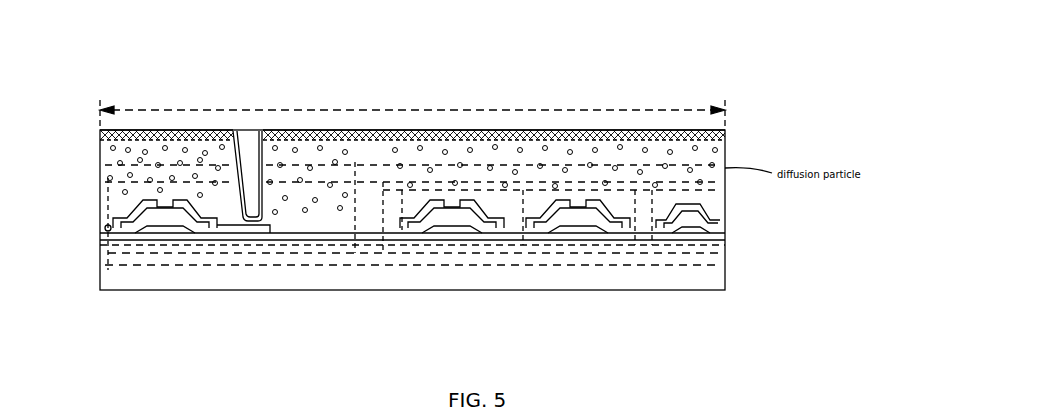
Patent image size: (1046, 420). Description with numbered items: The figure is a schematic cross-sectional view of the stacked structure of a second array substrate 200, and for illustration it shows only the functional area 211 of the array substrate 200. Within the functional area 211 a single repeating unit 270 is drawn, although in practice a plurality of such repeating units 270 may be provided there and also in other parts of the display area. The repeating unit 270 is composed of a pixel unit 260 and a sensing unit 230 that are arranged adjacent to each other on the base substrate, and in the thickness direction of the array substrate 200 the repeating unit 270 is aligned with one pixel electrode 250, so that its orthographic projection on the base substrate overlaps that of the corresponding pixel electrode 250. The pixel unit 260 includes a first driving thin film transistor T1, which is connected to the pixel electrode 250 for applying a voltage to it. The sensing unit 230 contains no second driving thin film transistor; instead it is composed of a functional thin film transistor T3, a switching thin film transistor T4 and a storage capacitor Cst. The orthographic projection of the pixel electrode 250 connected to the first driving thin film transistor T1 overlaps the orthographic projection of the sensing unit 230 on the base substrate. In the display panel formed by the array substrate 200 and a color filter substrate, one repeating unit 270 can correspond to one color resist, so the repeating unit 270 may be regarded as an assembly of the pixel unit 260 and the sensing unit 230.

The array substrate 200 is at (620, 87).
The functional area 211 is at (412, 108).
The pixel electrode 250 is at (727, 132).
The pixel unit 260 is at (125, 180).
The repeating unit 270 is at (138, 162).
The sensing unit 230 is at (725, 195).
The first driving thin film transistor T1 is at (173, 236).
The functional thin film transistor T3 is at (453, 245).
The switching thin film transistor T4 is at (580, 245).
The storage capacitor Cst is at (680, 245).